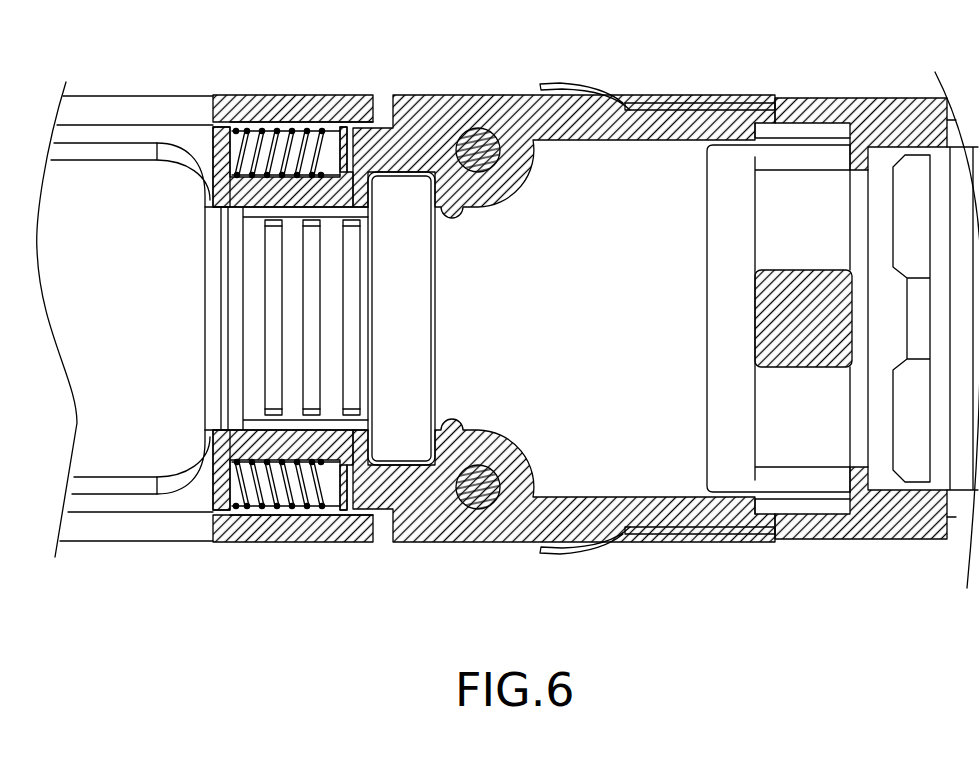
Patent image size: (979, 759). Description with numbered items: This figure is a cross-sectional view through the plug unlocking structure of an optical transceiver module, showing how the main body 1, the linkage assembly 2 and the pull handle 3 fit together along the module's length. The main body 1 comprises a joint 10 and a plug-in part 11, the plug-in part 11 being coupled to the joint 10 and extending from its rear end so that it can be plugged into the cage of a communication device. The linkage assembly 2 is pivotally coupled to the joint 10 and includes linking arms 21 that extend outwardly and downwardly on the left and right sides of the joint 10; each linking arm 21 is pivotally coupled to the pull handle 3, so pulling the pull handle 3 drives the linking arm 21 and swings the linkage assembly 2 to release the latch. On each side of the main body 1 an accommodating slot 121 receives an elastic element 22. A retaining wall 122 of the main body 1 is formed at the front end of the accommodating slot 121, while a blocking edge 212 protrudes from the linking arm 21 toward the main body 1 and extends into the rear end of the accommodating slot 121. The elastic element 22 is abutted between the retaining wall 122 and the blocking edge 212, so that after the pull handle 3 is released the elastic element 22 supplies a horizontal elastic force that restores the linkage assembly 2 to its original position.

The main body 1 is at (666, 358).
The joint 10 is at (428, 537).
The plug-in part 11 is at (759, 337).
The linkage assembly 2 is at (284, 548).
The linking arm 21 is at (273, 97).
The elastic element 22 is at (297, 130).
The accommodating slot 121 is at (257, 120).
The retaining wall 122 is at (212, 141).
The blocking edge 212 is at (337, 143).
The pull handle 3 is at (137, 548).